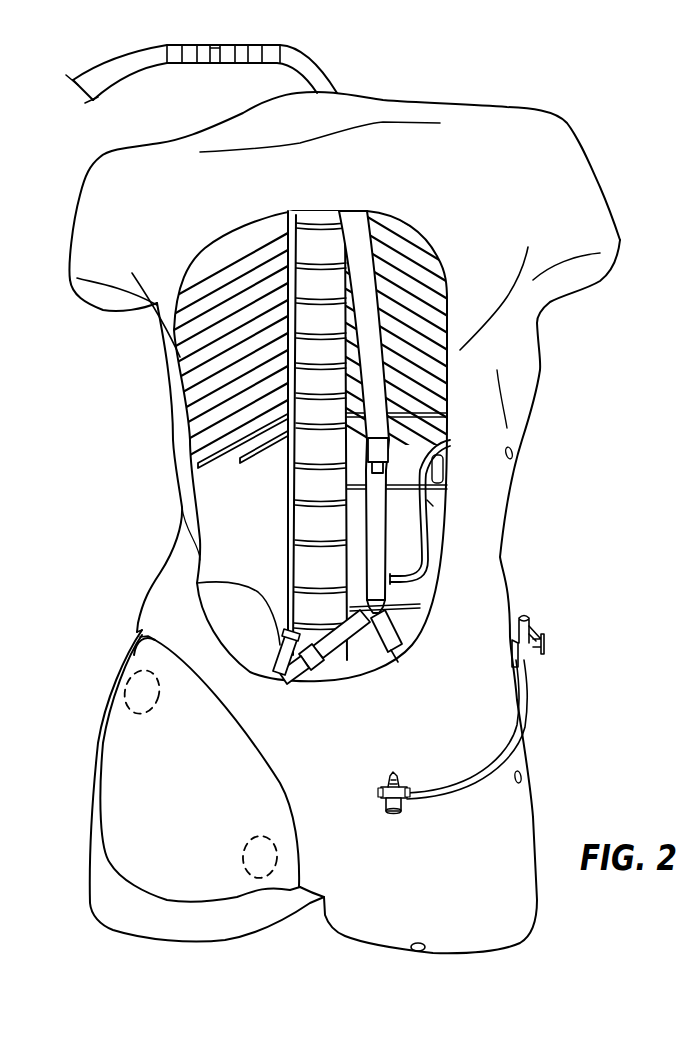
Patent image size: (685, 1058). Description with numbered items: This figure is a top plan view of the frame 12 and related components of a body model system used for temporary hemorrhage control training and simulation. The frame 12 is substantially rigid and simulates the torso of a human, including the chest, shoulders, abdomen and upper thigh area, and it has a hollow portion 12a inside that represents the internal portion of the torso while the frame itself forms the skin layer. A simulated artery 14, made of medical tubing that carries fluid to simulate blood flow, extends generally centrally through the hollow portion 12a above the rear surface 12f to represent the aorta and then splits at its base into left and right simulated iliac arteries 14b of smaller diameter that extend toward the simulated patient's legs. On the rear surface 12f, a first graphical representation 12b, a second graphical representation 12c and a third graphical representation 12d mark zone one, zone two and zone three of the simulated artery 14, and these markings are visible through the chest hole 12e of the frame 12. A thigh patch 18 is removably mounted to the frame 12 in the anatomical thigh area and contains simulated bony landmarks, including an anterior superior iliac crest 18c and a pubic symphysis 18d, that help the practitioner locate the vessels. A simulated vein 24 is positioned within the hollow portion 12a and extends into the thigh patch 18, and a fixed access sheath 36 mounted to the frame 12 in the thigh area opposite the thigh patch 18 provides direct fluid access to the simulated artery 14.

The frame 12 is at (153, 305).
The hollow portion 12a is at (190, 507).
The first graphical representation 12b is at (450, 353).
The second graphical representation 12c is at (427, 447).
The third graphical representation 12d is at (433, 503).
The chest hole 12e is at (233, 227).
The rear surface 12f is at (215, 532).
The simulated artery 14 is at (363, 277).
The simulated iliac artery 14b is at (372, 660).
The thigh patch 18 is at (107, 783).
The anterior superior iliac crest 18c is at (123, 693).
The pubic symphysis 18d is at (253, 880).
The simulated vein 24 is at (287, 503).
The fixed access sheath 36 is at (386, 780).